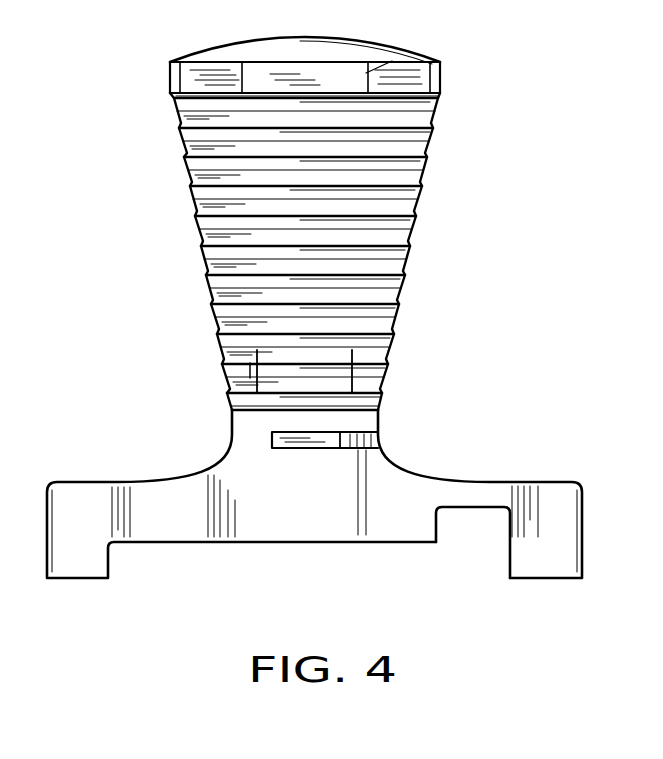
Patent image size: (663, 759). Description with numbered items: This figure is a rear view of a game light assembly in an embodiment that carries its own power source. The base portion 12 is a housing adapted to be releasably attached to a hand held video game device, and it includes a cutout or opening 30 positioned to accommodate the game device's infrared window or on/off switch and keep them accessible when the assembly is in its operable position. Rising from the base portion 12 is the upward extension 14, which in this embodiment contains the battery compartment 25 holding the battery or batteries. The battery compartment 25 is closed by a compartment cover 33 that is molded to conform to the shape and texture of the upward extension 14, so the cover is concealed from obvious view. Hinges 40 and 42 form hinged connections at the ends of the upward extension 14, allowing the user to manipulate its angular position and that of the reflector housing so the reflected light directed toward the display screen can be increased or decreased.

The base portion 12 is at (202, 507).
The upward extension 14 is at (387, 207).
The battery compartment 25 is at (318, 372).
The cutout or opening 30 is at (473, 522).
The compartment cover 33 is at (345, 372).
The hinge 40 is at (421, 55).
The hinge 42 is at (338, 447).